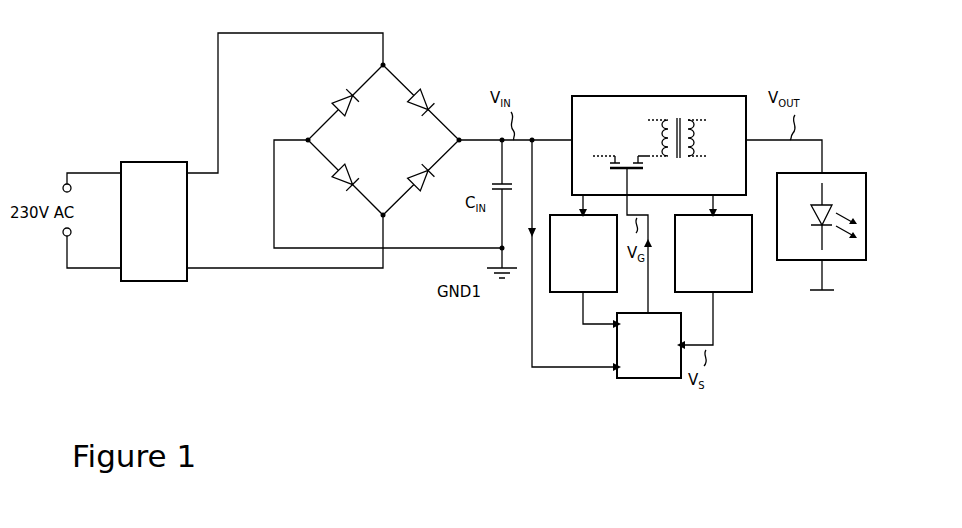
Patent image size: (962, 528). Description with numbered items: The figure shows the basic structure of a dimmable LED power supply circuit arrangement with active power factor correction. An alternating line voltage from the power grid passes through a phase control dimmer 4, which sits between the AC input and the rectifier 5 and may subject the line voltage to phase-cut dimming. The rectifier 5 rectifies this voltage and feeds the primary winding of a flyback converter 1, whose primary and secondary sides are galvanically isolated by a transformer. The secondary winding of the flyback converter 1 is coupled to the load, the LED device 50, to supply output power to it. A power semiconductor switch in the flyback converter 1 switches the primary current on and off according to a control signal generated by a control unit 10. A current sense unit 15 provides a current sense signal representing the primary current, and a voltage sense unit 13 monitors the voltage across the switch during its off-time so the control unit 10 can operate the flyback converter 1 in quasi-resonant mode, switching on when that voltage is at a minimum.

The flyback converter 1 is at (659, 195).
The phase control dimmer 4 is at (172, 248).
The rectifier 5 is at (373, 140).
The control unit 10 is at (649, 345).
The voltage sense unit 13 is at (583, 253).
The current sense unit 15 is at (713, 253).
The LED device 50 is at (837, 195).